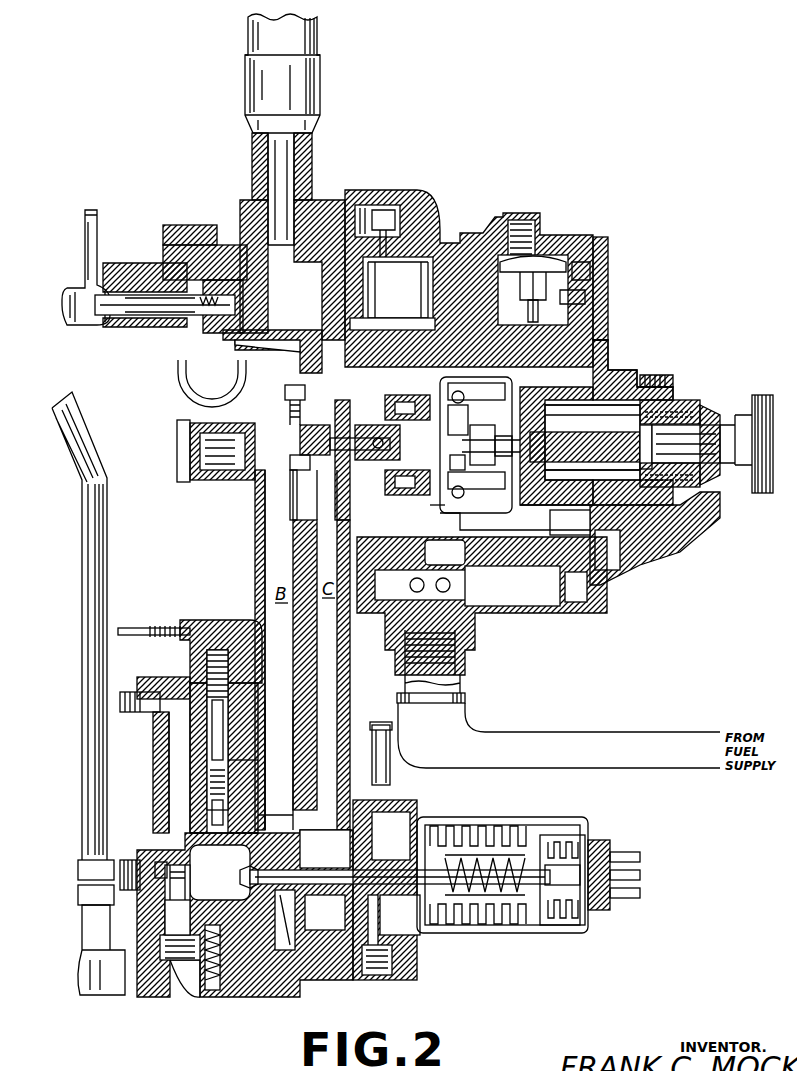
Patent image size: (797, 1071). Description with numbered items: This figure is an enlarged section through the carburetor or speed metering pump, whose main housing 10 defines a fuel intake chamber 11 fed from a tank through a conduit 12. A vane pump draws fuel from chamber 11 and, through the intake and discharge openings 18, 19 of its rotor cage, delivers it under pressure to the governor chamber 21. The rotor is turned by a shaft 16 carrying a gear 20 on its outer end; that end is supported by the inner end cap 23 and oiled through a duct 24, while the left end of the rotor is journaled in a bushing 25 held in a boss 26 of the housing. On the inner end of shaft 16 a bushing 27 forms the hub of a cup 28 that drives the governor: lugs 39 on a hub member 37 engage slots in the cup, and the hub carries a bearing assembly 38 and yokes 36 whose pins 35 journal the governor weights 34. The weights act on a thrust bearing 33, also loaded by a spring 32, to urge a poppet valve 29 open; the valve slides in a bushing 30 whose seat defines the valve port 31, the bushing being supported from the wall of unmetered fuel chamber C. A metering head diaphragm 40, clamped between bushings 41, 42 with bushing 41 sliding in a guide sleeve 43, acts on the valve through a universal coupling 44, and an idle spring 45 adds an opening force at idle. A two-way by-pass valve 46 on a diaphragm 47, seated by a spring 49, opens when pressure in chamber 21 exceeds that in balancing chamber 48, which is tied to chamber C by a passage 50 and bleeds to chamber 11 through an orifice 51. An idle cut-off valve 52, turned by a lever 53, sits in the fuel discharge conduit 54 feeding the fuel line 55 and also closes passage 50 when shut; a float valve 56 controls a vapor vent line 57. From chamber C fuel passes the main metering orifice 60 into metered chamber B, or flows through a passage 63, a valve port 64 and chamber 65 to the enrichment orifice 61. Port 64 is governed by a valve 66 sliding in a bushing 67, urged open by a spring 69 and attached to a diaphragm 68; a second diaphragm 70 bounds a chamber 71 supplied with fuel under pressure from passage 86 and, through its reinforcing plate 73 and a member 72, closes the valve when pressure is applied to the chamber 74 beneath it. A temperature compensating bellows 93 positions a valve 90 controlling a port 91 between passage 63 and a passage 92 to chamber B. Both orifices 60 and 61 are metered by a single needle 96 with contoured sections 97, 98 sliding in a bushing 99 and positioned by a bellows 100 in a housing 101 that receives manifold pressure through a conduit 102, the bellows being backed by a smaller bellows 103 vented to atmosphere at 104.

The main housing 10 is at (610, 345).
The fuel intake chamber 11 is at (556, 542).
The conduit 12 is at (665, 770).
The rotor shaft 16 is at (708, 433).
The intake opening 18 is at (590, 490).
The discharge opening 19 is at (585, 404).
The gear 20 is at (760, 495).
The governor chamber 21 is at (560, 374).
The inner end cap 23 is at (670, 402).
The duct 24 is at (652, 522).
The bushing 25 is at (555, 480).
The boss 26 is at (530, 520).
The bushing 27 is at (490, 432).
The cup 28 is at (515, 475).
The poppet valve 29 is at (377, 442).
The bushing 30 is at (395, 489).
The valve port 31 is at (345, 455).
The spring 32 is at (491, 440).
The thrust bearing 33 is at (463, 467).
The governor weights 34 is at (487, 395).
The pins 35 is at (425, 492).
The yokes 36 is at (482, 606).
The hub member 37 is at (405, 396).
The bearing assembly 38 is at (398, 406).
The lugs 39 is at (430, 510).
The metering head diaphragm 40 is at (292, 520).
The bushing 41 is at (290, 505).
The bushing 42 is at (305, 395).
The guide sleeve 43 is at (255, 485).
The universal coupling 44 is at (332, 440).
The idle spring 45 is at (288, 398).
The two-way by-pass valve 46 is at (588, 297).
The diaphragm 47 is at (560, 272).
The balancing chamber 48 is at (542, 262).
The spring 49 is at (524, 214).
The duct or passage 50 is at (318, 325).
The restricted orifice or bleed 51 is at (592, 274).
The idle cut-off valve 52 is at (185, 330).
The operating lever 53 is at (85, 262).
The fuel discharge conduit 54 is at (208, 383).
The fuel line 55 is at (318, 42).
The float valve 56 is at (435, 245).
The vapor vent line 57 is at (378, 212).
The main metering orifice 60 is at (312, 880).
The supplemental or enrichment metering orifice 61 is at (252, 882).
The passage 63 is at (282, 720).
The valve port 64 is at (202, 856).
The chamber 65 is at (195, 835).
The selectively operable valve 66 is at (165, 880).
The bushing 67 is at (165, 905).
The diaphragm 68 is at (122, 978).
The spring 69 is at (160, 912).
The diaphragm 70 is at (155, 985).
The chamber 71 is at (222, 955).
The member 72 is at (172, 962).
The central reinforcing plate 73 is at (205, 992).
The pressure chamber 74 is at (185, 990).
The passage 86 is at (145, 850).
The valve 90 is at (225, 702).
The port 91 is at (210, 748).
The passage 92 is at (225, 778).
The temperature compensating bellows 93 is at (190, 658).
The metering needle 96 is at (340, 884).
The contoured metering section 97 is at (280, 892).
The contoured metering section 98 is at (276, 814).
The bushing 99 is at (392, 935).
The bellows 100 is at (480, 830).
The housing 101 is at (556, 822).
The conduit 102 is at (390, 748).
The smaller bellows 103 is at (553, 912).
The vent 104 is at (641, 866).